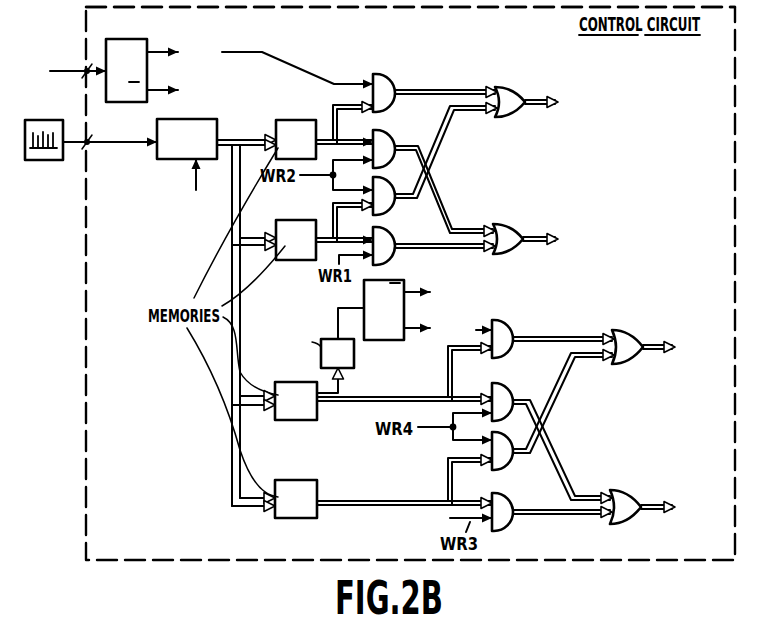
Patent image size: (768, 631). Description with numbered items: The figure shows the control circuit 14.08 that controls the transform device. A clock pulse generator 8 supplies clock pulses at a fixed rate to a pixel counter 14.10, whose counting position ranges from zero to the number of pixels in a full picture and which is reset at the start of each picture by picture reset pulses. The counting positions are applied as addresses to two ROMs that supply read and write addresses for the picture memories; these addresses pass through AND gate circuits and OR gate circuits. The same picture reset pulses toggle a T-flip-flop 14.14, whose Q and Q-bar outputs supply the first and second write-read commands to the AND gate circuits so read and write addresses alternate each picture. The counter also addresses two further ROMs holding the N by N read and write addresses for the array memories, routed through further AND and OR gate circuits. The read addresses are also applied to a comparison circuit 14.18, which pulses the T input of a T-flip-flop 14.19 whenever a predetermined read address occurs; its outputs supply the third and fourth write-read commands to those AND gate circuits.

The clock pulse generator 8 is at (50, 160).
The control circuit 14.08 is at (82, 312).
The pixel counter 14.10 is at (182, 154).
The T-flip-flop 14.14 is at (124, 31).
The comparison circuit 14.18 is at (354, 352).
The T-flip-flop 14.19 is at (364, 297).